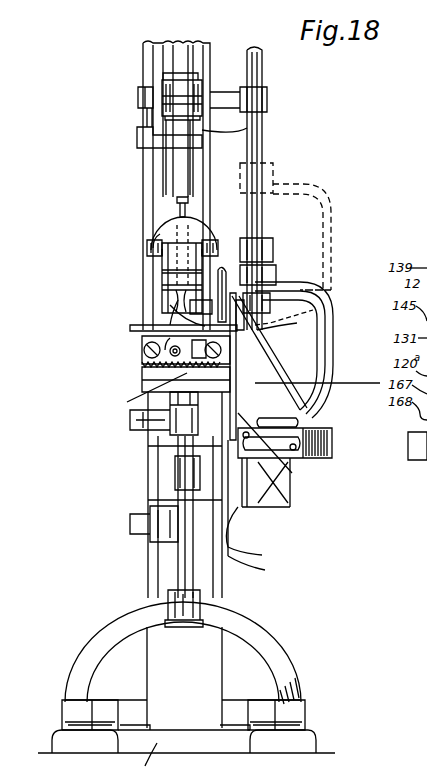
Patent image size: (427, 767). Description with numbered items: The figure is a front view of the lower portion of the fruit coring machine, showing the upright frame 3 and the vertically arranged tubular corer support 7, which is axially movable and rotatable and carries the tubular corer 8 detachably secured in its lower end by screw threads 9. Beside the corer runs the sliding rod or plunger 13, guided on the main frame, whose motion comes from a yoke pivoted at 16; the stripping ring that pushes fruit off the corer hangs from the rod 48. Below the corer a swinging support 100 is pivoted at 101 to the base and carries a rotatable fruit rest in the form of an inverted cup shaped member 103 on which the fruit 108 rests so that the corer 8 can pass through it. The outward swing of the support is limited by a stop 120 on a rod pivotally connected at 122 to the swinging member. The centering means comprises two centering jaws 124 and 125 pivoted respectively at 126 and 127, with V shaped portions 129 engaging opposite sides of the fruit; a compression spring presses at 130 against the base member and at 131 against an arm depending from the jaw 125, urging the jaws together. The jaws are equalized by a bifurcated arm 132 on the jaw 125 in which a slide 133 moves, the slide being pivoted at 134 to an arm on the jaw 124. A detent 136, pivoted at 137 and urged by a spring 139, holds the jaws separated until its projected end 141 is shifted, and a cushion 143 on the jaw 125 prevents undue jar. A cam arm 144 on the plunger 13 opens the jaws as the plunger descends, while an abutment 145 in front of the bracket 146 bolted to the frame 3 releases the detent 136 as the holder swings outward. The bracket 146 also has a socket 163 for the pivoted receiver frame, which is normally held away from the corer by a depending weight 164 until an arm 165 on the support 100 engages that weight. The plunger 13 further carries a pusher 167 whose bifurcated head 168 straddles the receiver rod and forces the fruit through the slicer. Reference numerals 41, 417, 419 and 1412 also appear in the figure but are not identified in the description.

The upright frame 3 is at (238, 656).
The tubular corer support 7 is at (173, 165).
The tubular corer 8 is at (172, 205).
The screw threads 9 is at (188, 200).
The sliding rod or plunger 13 is at (264, 151).
The pivot 16 is at (249, 378).
The bracket arm 41 is at (247, 128).
The rod 48 is at (162, 94).
The swinging support 100 is at (180, 553).
The pivot 101 is at (303, 688).
The inverted cup shaped member 103 is at (168, 266).
The fruit 108 is at (155, 229).
The stop 120 is at (142, 382).
The pivotal connection 122 is at (132, 520).
The centering jaw 124 is at (147, 242).
The centering member 125 is at (255, 330).
The pivot 126 is at (262, 248).
The pivot 127 is at (257, 340).
The V shaped portions 129 is at (242, 244).
The spring bearing point 130 is at (142, 348).
The spring bearing point 131 is at (236, 340).
The bifurcated arm 132 is at (187, 308).
The slide 133 is at (148, 392).
The pivot 134 is at (127, 402).
The detent 136 is at (192, 352).
The pivot 137 is at (176, 278).
The spring 139 is at (190, 301).
The projected end of detent 141 is at (258, 86).
The cushion 143 is at (340, 254).
The cam arm 144 is at (335, 286).
The abutment 145 is at (288, 468).
The bracket 146 is at (148, 458).
The socket 163 is at (268, 507).
The weight 164 is at (256, 534).
The arm 165 is at (259, 566).
The pusher 167 is at (334, 336).
The head 168 is at (333, 412).
The arm 417 is at (140, 146).
The bracket 419 is at (140, 90).
The clamp block 1412 is at (270, 272).